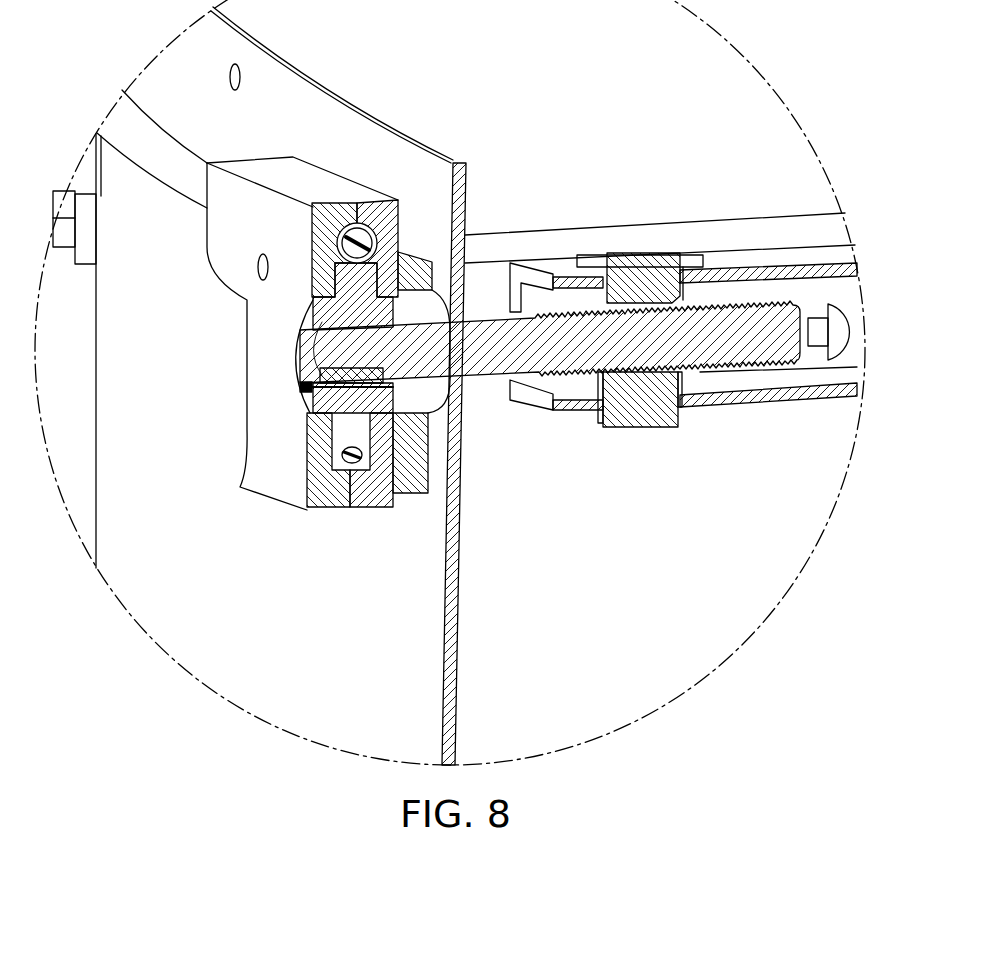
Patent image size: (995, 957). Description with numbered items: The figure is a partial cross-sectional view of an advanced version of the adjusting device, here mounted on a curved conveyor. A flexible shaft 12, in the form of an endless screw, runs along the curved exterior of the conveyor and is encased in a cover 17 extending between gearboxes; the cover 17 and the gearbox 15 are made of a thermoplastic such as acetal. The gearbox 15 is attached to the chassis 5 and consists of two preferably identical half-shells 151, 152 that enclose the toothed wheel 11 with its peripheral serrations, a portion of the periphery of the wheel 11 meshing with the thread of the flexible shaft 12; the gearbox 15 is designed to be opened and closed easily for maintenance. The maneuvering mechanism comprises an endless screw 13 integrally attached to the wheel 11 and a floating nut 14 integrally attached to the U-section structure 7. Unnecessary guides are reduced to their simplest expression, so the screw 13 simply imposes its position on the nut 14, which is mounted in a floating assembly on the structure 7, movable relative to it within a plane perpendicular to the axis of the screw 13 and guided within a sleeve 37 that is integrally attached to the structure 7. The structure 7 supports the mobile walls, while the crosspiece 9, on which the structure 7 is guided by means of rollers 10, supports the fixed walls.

The chassis 5 is at (310, 717).
The structure 7 is at (793, 397).
The crosspiece 9 is at (773, 237).
The rollers 10 is at (855, 337).
The wheel 11 is at (350, 422).
The flexible shaft 12 is at (362, 228).
The endless screw 13 is at (745, 342).
The floating nut 14 is at (643, 417).
The gearbox 15 is at (243, 295).
The cover 17 is at (120, 120).
The sleeve 37 is at (688, 262).
The half-shell 151 is at (372, 493).
The half-shell 152 is at (330, 493).